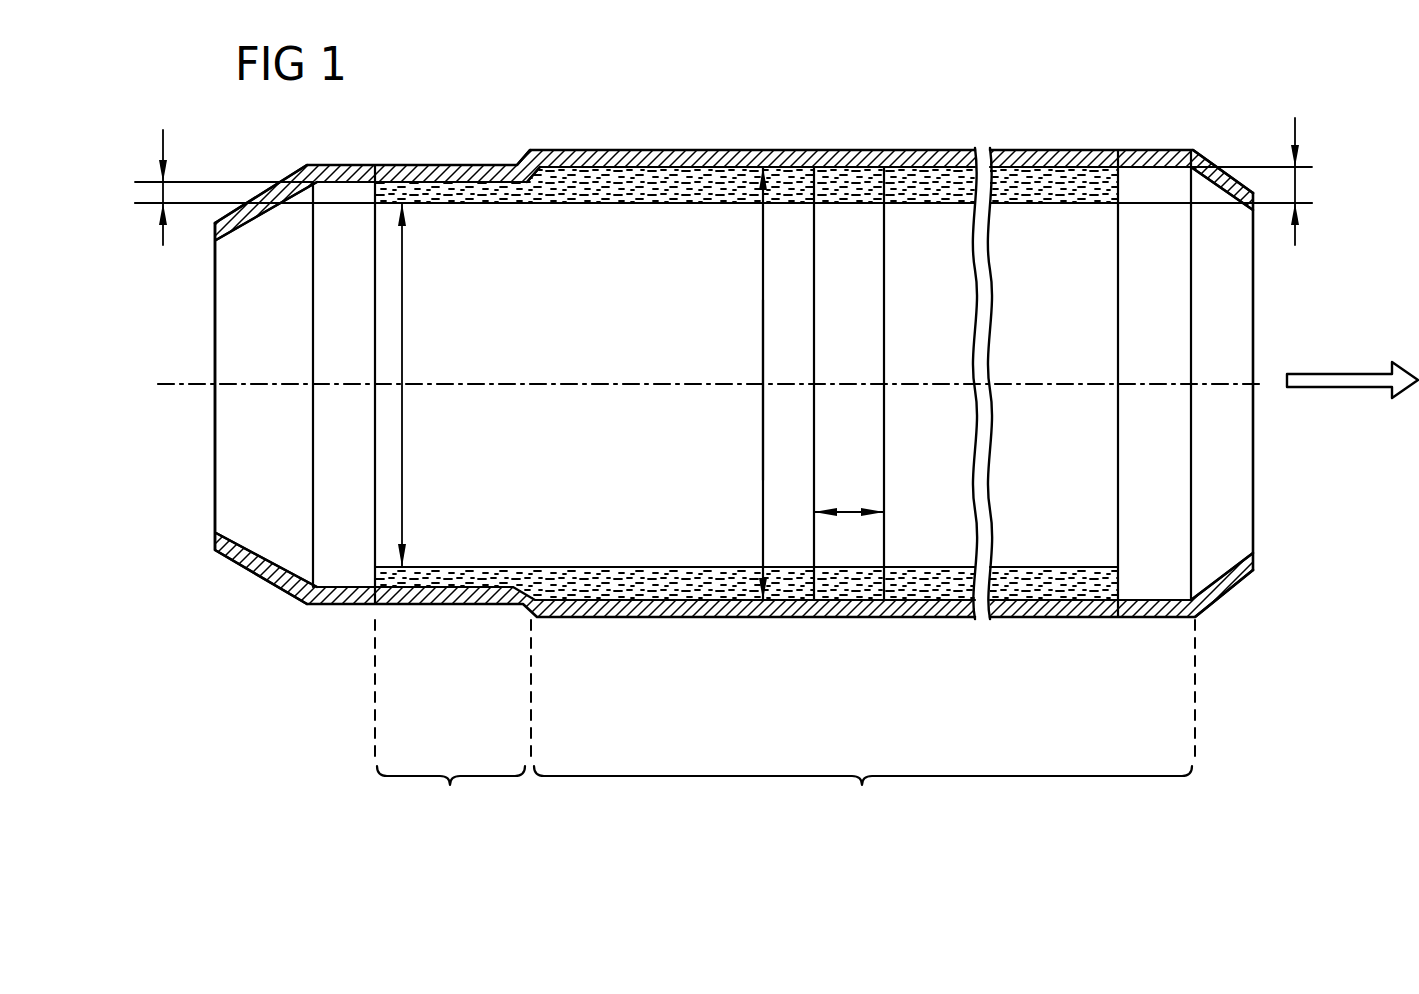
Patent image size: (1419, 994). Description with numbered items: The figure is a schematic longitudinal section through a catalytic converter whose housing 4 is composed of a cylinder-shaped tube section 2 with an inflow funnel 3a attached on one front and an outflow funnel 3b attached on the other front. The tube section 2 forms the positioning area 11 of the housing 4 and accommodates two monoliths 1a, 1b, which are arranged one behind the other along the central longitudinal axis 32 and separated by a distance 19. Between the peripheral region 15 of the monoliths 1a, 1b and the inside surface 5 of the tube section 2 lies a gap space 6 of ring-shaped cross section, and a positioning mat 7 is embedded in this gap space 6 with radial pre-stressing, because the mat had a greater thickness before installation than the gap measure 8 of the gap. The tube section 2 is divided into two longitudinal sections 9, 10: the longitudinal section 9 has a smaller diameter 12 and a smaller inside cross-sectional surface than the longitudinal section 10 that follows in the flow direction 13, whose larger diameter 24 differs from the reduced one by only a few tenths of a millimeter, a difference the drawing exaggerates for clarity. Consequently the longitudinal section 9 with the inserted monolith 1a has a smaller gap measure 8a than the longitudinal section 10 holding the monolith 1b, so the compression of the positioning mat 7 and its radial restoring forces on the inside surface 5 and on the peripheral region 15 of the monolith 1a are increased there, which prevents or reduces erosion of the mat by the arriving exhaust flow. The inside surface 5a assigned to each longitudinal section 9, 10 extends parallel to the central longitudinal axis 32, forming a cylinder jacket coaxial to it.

The monolith 1a is at (474, 535).
The monolith 1b is at (1040, 540).
The tube section 2 is at (643, 165).
The inflow funnel 3a is at (255, 575).
The outflow funnel 3b is at (1220, 593).
The housing 4 is at (796, 620).
The inside surface 5 is at (627, 597).
The inside surface 5a is at (440, 183).
The gap space 6 is at (823, 175).
The positioning mat 7 is at (553, 182).
The gap measure 8 is at (1298, 170).
The gap measure 8a is at (160, 192).
The longitudinal section 9 is at (453, 722).
The longitudinal section 10 is at (864, 722).
The positioning area 11 is at (765, 140).
The diameter 12 is at (403, 367).
The flow direction 13 is at (1343, 375).
The peripheral region 15 is at (692, 202).
The distance 19 is at (848, 510).
The diameter 24 is at (762, 400).
The central longitudinal axis 32 is at (262, 388).